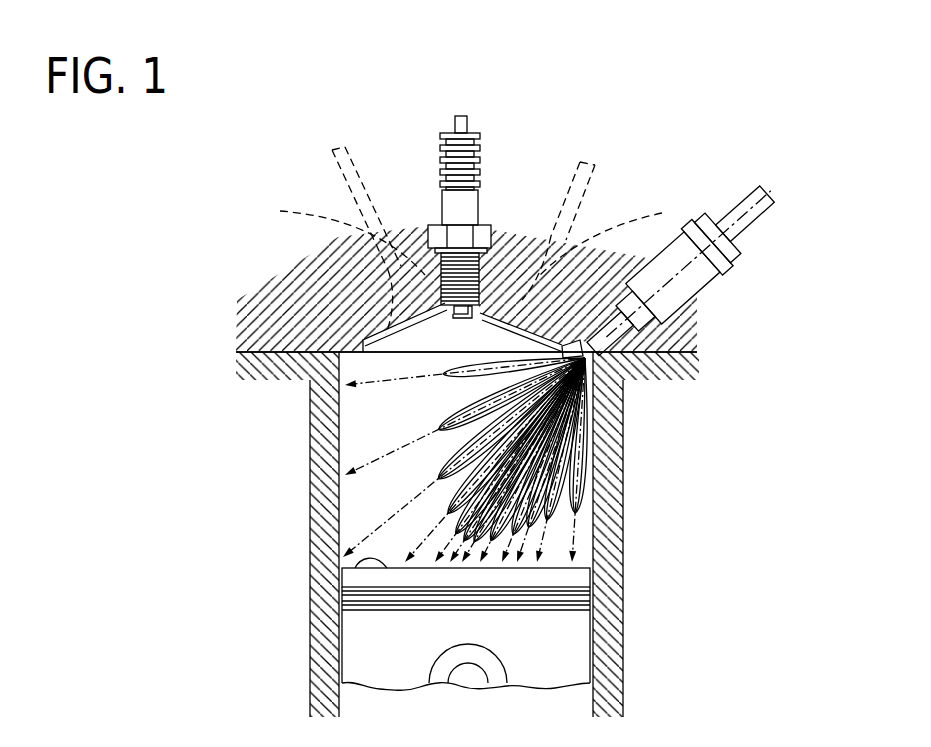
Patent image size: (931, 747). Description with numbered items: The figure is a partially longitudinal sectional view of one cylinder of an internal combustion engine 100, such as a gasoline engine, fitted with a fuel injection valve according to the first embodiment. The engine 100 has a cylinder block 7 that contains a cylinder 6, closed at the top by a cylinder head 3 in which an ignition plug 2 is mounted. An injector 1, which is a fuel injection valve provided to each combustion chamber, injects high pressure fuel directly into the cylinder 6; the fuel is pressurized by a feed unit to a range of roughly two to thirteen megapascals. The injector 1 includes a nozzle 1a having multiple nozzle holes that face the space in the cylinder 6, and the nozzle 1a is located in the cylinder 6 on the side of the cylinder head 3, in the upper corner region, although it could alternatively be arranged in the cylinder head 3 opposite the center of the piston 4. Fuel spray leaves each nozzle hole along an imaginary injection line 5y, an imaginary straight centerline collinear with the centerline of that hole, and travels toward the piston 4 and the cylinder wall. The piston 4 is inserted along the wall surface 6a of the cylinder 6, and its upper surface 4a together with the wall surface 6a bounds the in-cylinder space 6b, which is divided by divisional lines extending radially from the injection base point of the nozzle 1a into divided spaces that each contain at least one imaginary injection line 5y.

The internal combustion engine 100 is at (660, 164).
The injector 1 is at (699, 285).
The nozzle 1a is at (597, 380).
The ignition plug 2 is at (465, 207).
The cylinder head 3 is at (268, 313).
The piston 4 is at (570, 650).
The upper surface of the piston 4a is at (345, 572).
The imaginary injection line 5y is at (368, 457).
The cylinder 6 is at (608, 500).
The wall surface of the cylinder 6a is at (340, 433).
The in-cylinder space 6b is at (353, 363).
The cylinder block 7 is at (297, 522).